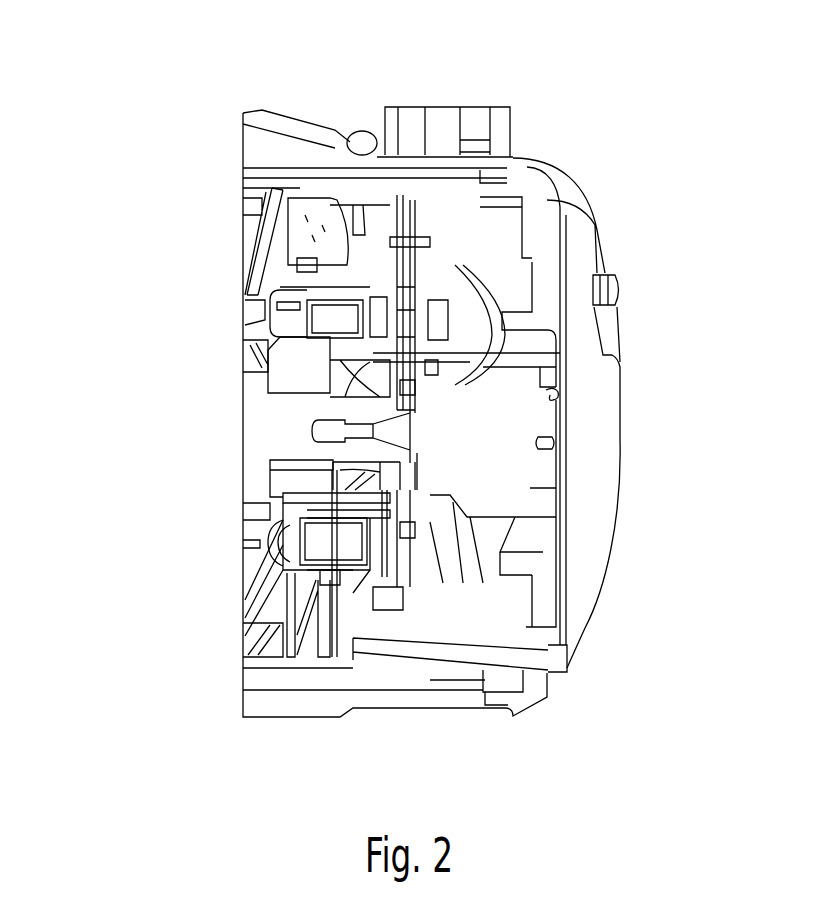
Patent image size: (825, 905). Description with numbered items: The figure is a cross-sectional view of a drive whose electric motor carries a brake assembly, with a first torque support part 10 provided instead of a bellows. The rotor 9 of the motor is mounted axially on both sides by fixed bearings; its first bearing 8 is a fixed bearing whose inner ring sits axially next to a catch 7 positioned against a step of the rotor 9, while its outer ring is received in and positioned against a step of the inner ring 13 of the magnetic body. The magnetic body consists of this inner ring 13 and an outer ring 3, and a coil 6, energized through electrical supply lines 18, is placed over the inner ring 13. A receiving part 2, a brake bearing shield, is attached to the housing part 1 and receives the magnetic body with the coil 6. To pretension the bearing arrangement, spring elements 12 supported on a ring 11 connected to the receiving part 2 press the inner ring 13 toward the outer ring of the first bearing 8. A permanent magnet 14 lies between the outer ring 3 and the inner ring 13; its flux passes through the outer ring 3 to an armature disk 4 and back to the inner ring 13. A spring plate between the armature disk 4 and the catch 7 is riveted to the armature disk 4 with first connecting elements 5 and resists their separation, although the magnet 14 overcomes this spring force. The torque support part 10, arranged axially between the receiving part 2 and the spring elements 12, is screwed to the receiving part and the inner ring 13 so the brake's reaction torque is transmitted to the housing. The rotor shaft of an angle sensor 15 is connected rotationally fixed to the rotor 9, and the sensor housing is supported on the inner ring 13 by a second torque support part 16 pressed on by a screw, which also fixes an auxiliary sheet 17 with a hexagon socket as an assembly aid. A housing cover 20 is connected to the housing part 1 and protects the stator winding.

The housing part 1 is at (257, 147).
The receiving part 2 is at (327, 278).
The outer ring of the magnetic body 3 is at (320, 297).
The armature disk 4 is at (292, 297).
The first connecting elements 5 is at (283, 317).
The coil 6 is at (255, 362).
The catch 7 is at (292, 375).
The first bearing 8 is at (355, 373).
The rotor 9 is at (313, 459).
The first torque support part 10 is at (405, 255).
The ring 11 is at (430, 268).
The spring elements 12 is at (413, 276).
The inner ring of the magnetic body 13 is at (546, 444).
The permanent magnet 14 is at (553, 393).
The angle sensor 15 is at (507, 459).
The second torque support part 16 is at (430, 367).
The auxiliary sheet 17 is at (407, 387).
The electrical supply lines 18 is at (333, 658).
The housing cover 20 is at (587, 540).